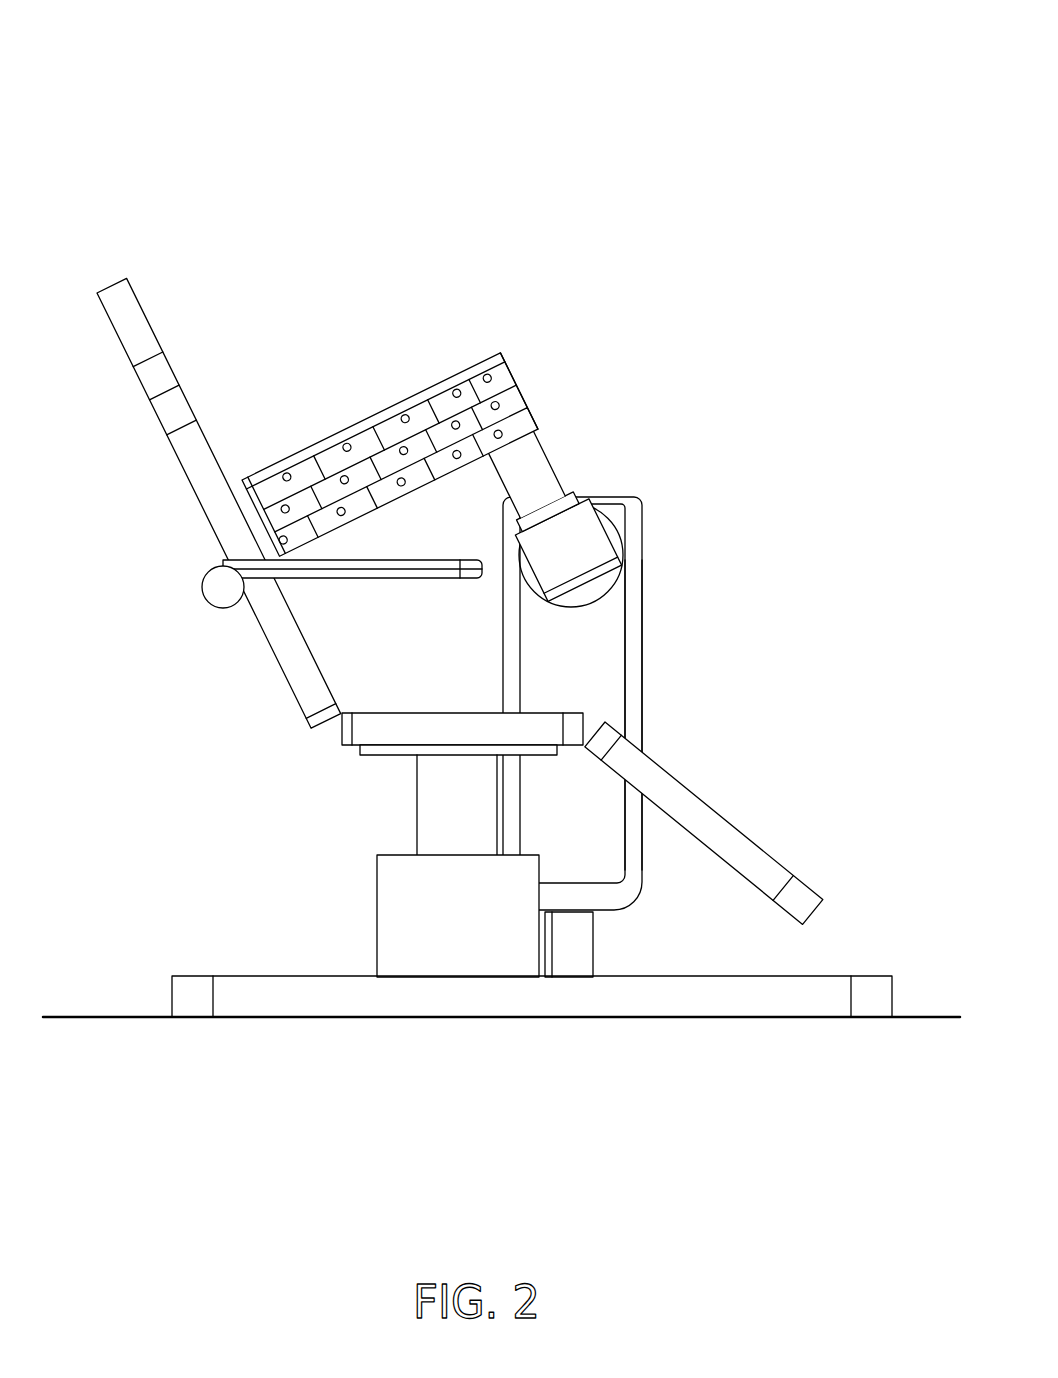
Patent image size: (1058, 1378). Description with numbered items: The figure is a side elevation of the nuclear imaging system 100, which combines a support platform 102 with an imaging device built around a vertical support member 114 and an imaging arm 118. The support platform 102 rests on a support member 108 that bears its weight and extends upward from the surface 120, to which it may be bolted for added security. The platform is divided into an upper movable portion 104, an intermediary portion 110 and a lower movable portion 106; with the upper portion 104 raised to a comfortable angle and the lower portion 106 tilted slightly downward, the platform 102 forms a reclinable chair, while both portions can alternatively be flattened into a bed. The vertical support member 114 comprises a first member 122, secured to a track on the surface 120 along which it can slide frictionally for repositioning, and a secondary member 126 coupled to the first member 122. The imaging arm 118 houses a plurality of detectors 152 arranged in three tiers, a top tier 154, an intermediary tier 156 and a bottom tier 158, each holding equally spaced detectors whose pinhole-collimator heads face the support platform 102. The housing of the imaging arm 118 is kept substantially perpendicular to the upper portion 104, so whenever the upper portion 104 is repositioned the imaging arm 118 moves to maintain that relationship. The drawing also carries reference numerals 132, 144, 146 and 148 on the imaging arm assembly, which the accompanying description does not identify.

The nuclear imaging system 100 is at (496, 541).
The support platform 102 is at (501, 897).
The upper, movable portion 104 is at (165, 488).
The lower, movable portion 106 is at (736, 887).
The support member 108 is at (385, 923).
The intermediary portion 110 is at (378, 766).
The vertical support member 114 is at (624, 703).
The imaging arm 118 is at (361, 471).
The surface 120 is at (745, 998).
The first member 122 is at (570, 962).
The secondary member 126 is at (613, 667).
The arm 132 is at (538, 466).
The grid cells 144 is at (412, 401).
The apertures 146 is at (407, 487).
The top rail 148 is at (306, 447).
The detectors 152 is at (506, 388).
The top tier 154 is at (262, 495).
The intermediary tier 156 is at (208, 602).
The bottom tier 158 is at (272, 578).